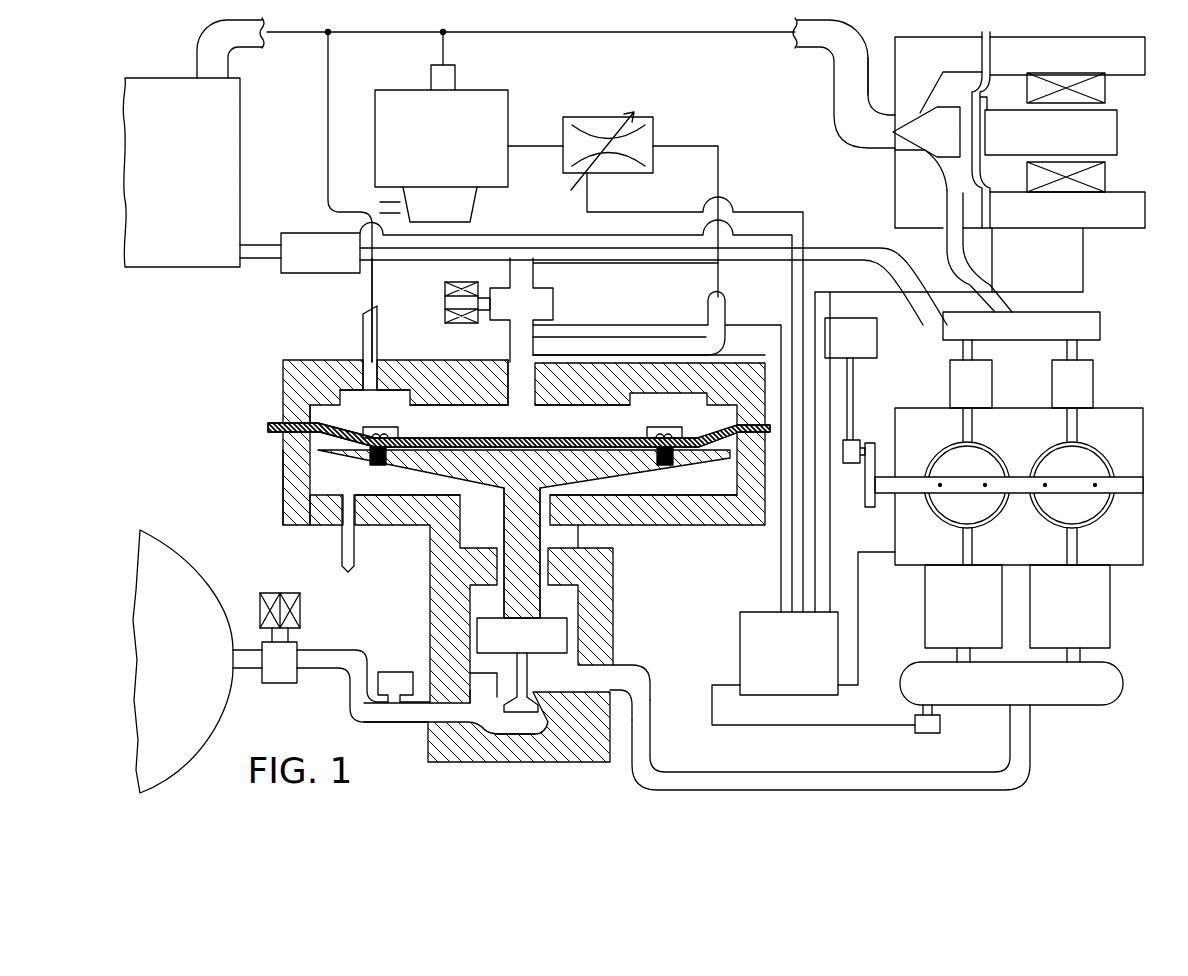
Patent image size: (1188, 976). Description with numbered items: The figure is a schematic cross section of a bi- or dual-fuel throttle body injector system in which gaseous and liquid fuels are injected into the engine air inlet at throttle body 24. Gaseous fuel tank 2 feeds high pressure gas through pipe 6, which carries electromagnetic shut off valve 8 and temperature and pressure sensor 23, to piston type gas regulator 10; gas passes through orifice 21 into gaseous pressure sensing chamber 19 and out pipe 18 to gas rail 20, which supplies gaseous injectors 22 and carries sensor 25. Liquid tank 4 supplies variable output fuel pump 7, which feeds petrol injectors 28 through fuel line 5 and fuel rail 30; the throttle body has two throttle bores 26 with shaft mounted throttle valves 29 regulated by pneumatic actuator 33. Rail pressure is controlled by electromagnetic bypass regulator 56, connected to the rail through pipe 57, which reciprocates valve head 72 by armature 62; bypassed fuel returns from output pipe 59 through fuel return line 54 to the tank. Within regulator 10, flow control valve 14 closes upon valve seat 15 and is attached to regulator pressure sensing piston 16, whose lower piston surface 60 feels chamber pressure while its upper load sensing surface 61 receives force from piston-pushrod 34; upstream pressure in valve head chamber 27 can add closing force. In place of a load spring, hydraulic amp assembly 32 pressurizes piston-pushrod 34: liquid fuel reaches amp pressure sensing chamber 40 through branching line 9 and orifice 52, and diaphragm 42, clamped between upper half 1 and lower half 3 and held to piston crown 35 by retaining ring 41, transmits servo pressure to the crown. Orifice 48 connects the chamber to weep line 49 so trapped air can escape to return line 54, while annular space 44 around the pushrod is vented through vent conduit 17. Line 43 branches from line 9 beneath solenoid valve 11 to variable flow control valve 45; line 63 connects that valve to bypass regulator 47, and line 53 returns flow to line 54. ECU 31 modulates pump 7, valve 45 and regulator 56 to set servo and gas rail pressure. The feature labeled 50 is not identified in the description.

The upper half 1 is at (300, 420).
The gaseous fuel tank 2 is at (183, 661).
The lower half 3 is at (291, 499).
The liquid tank 4 is at (169, 231).
The fuel line 5 is at (420, 263).
The pipe 6 is at (350, 710).
The variable output fuel pump 7 is at (300, 274).
The electromagnetic shut off valve 8 is at (260, 612).
The branching line 9 is at (540, 272).
The piston type gas regulator 10 is at (614, 610).
The solenoid valve 11 is at (465, 323).
The flow control valve 14 is at (505, 710).
The valve seat 15 is at (552, 708).
The regulator pressure sensing piston 16 is at (513, 646).
The vent conduit 17 is at (342, 551).
The pipe 18 is at (806, 772).
The gaseous pressure sensing chamber 19 is at (477, 675).
The gas rail 20 is at (1012, 693).
The orifice 21 is at (468, 692).
The gaseous injectors 22 is at (955, 611).
The temperature and pressure sensor 23 is at (390, 672).
The throttle body 24 is at (923, 408).
The sensor 25 is at (940, 728).
The throttle bores 26 is at (1064, 452).
The valve head chamber 27 is at (509, 732).
The petrol injectors 28 is at (1052, 385).
The throttle valves 29 is at (958, 477).
The fuel rail 30 is at (1012, 336).
The ECU 31 is at (779, 679).
The hydraulic amp assembly 32 is at (283, 388).
The pneumatic actuator 33 is at (842, 346).
The piston-pushrod 34 is at (513, 475).
The piston crown 35 is at (387, 455).
The amp pressure sensing chamber 40 is at (449, 431).
The retaining ring 41 is at (385, 428).
The diaphragm 42 is at (268, 428).
The line 43 is at (720, 182).
The annular space 44 is at (338, 489).
The variable flow control valve 45 is at (600, 175).
The bypass regulator 47 is at (510, 108).
The orifice 48 is at (397, 401).
The weep line 49 is at (328, 148).
The orifice 50 is at (585, 406).
The orifice 52 is at (512, 393).
The line 53 is at (447, 50).
The fuel return line 54 is at (204, 66).
The electromagnetic bypass regulator 56 is at (895, 198).
The pipe 57 is at (1004, 288).
The output pipe 59 is at (836, 131).
The lower piston surface 60 is at (528, 659).
The load sensing surface 61 is at (540, 620).
The armature 62 is at (1042, 141).
The line 63 is at (535, 150).
The valve head 72 is at (931, 139).